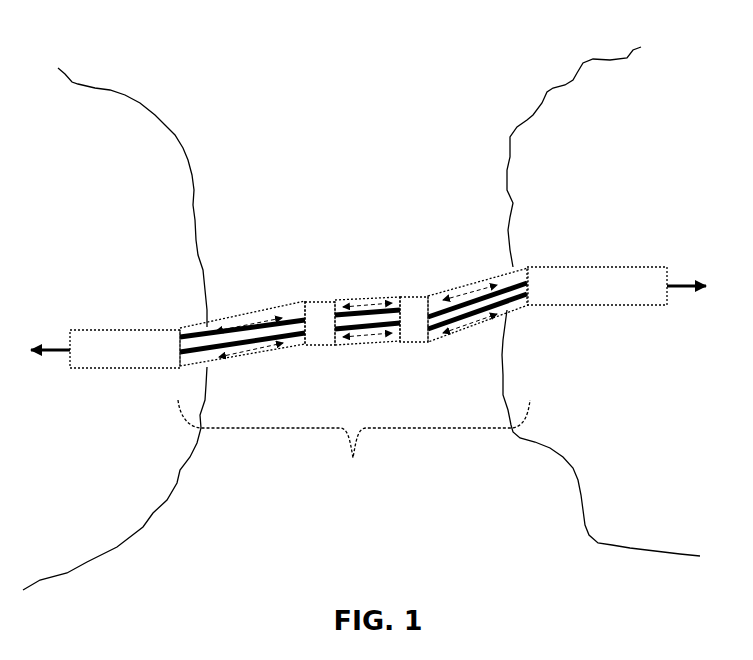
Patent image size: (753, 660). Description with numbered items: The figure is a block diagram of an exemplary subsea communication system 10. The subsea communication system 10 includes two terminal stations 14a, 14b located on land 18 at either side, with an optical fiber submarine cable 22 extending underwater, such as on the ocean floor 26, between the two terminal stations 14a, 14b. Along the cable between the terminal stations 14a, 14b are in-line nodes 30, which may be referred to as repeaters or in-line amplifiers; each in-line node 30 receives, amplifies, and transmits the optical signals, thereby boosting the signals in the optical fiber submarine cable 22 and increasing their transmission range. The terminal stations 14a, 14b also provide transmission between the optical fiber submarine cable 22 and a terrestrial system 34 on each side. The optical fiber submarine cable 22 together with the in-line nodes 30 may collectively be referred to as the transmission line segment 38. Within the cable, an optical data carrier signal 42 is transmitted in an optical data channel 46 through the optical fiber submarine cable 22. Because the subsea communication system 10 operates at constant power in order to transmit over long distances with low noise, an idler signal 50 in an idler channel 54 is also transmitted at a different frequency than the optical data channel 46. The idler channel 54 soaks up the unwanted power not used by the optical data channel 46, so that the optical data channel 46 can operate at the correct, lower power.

The subsea communication system 10 is at (353, 50).
The terminal station 14a is at (106, 365).
The terminal station 14b is at (578, 303).
The land 18 is at (134, 209).
The optical fiber submarine cable 22 is at (370, 345).
The ocean floor 26 is at (348, 186).
The in-line node 30 is at (322, 300).
The terrestrial system 34 is at (57, 360).
The transmission line segment 38 is at (354, 386).
The optical data carrier signal 42 is at (250, 317).
The optical data channel 46 is at (289, 318).
The idler signal 50 is at (238, 355).
The idler channel 54 is at (290, 338).